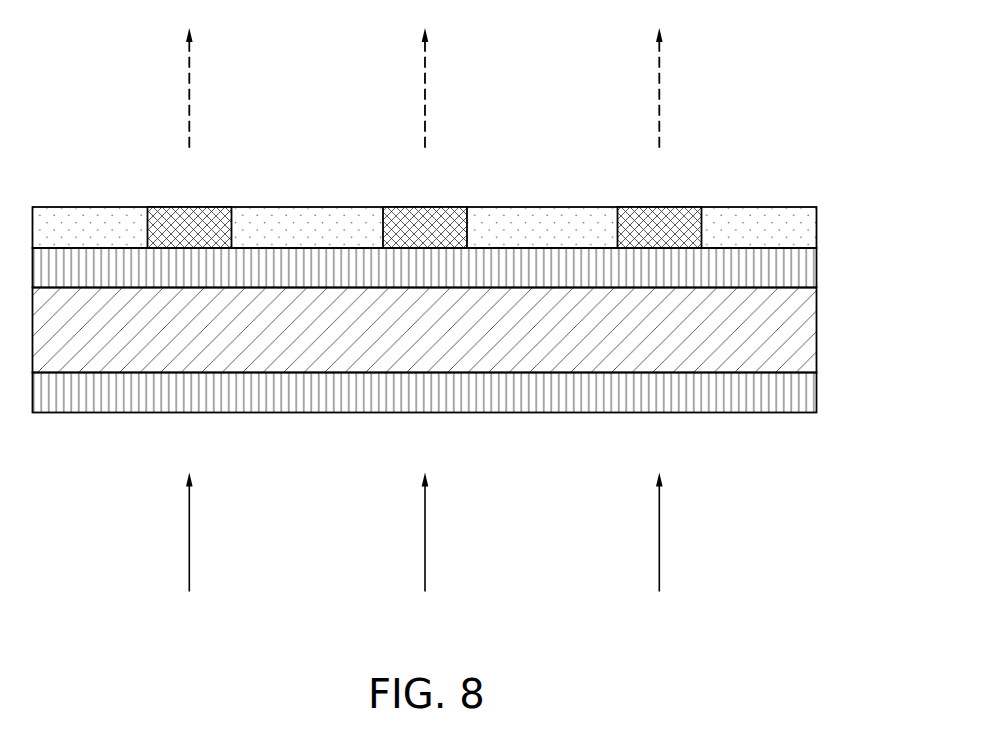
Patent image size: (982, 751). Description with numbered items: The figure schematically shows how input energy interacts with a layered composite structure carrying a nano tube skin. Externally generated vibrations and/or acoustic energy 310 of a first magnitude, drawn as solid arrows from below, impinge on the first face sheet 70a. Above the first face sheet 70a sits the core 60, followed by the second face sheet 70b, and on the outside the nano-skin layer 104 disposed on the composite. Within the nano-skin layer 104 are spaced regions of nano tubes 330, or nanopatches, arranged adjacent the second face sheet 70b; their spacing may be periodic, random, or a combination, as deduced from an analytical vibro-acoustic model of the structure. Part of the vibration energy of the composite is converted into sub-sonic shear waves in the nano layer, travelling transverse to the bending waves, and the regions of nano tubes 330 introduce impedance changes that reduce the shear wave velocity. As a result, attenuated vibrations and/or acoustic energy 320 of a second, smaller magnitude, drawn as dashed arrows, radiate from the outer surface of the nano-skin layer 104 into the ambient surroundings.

The nano-skin layer 104 is at (813, 231).
The regions of nano tubes 330 is at (183, 212).
The second face sheet 70b is at (812, 271).
The core 60 is at (812, 332).
The first face sheet 70a is at (812, 395).
The attenuated vibrations and/or acoustic energy 320 is at (427, 80).
The vibrations and/or acoustic energy 310 is at (427, 539).